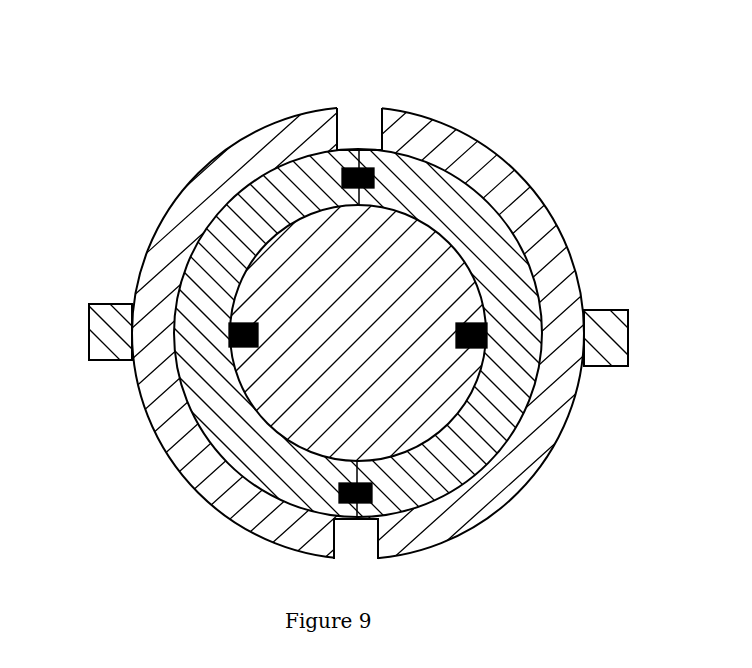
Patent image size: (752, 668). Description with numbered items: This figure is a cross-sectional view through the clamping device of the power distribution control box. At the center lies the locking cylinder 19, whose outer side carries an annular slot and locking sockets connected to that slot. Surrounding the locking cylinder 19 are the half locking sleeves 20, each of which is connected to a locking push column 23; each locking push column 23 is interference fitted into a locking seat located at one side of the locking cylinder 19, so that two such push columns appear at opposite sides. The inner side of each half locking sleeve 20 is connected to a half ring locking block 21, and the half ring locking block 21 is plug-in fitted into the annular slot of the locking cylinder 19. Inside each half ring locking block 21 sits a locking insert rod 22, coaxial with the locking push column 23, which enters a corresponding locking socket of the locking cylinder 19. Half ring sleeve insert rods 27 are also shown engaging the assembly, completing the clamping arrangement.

The locking cylinder 19 is at (325, 412).
The half locking sleeve 20 is at (256, 156).
The half ring locking block 21 is at (214, 255).
The locking insert rod 22 is at (232, 348).
The locking push column 23 is at (113, 338).
The half ring sleeve insert rod 27 is at (345, 170).